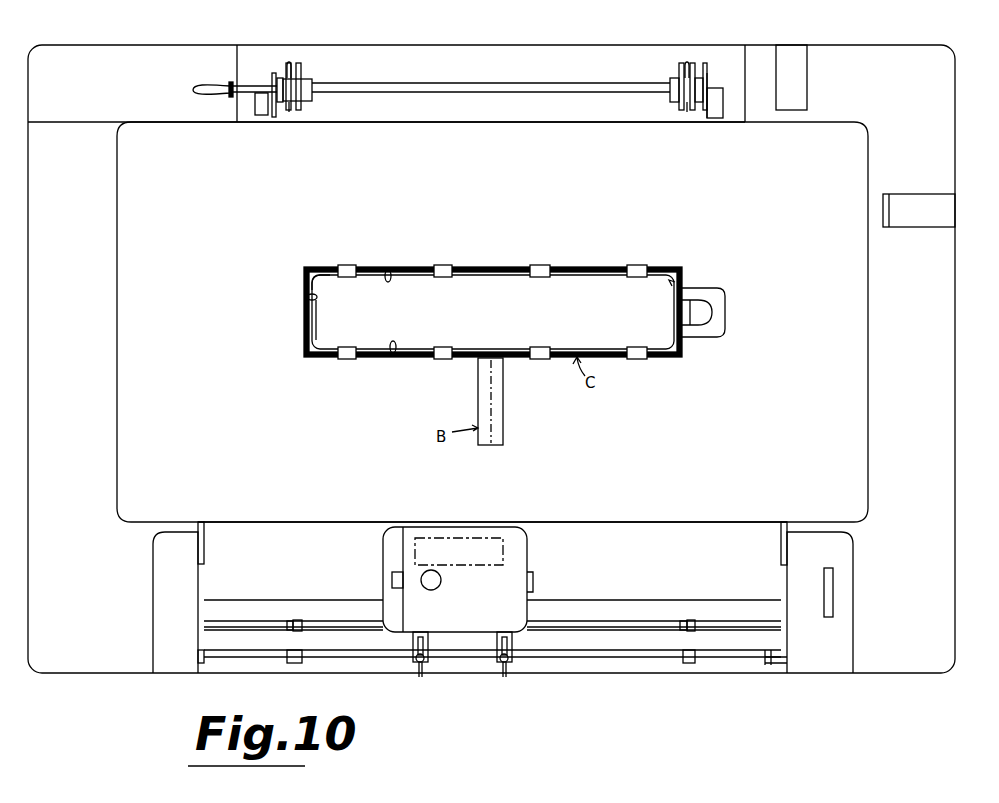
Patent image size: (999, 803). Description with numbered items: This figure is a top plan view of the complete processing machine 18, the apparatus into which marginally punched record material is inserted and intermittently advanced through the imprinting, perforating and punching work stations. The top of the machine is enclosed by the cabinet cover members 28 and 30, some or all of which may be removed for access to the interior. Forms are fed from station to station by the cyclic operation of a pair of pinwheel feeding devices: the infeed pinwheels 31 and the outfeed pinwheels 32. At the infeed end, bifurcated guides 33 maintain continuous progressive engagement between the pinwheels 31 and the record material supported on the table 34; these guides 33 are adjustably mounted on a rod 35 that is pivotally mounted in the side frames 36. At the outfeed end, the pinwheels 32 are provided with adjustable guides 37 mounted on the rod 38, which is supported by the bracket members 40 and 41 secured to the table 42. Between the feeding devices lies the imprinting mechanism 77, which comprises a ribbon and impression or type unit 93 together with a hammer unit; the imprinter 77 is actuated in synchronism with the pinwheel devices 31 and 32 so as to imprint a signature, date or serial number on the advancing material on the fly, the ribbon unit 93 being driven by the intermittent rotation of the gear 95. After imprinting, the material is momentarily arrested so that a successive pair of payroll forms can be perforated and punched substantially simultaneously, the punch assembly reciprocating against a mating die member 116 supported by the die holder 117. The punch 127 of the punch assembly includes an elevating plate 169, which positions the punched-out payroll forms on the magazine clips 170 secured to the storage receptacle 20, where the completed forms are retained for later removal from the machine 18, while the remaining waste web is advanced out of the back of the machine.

The processing machine 18 is at (526, 712).
The storage receptacle 20 is at (493, 275).
The cover member 28 is at (862, 160).
The cover member 30 is at (955, 118).
The pinwheel feeding device 31 is at (296, 622).
The pinwheel feeding device 32 is at (293, 66).
The bifurcated guides 33 is at (288, 622).
The table 34 is at (311, 530).
The rod 35 is at (354, 660).
The side frames 36 is at (205, 553).
The adjustable guides 37 is at (302, 80).
The rod 38 is at (360, 88).
The bracket member 40 is at (259, 116).
The bracket member 41 is at (713, 114).
The table 42 is at (442, 57).
The imprinting mechanism 77 is at (476, 602).
The ribbon and impression or type unit 93 is at (522, 560).
The gear 95 is at (724, 605).
The die member 116 is at (387, 272).
The die holder 117 is at (306, 280).
The punch 127 is at (312, 322).
The elevating plate 169 is at (326, 332).
The magazine clips 170 is at (348, 358).